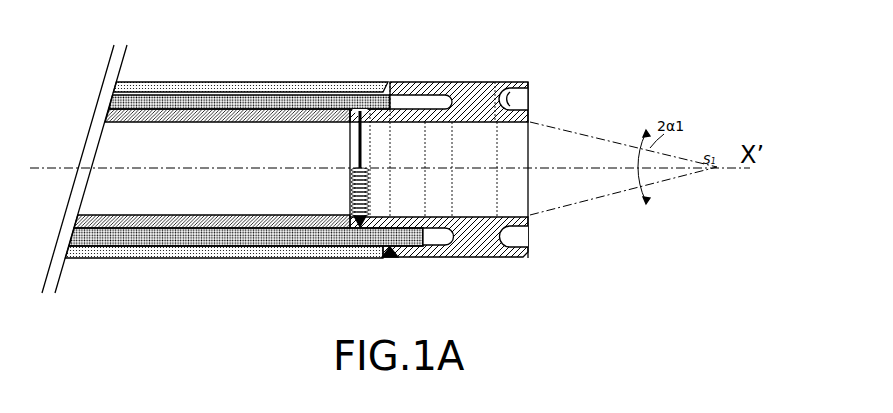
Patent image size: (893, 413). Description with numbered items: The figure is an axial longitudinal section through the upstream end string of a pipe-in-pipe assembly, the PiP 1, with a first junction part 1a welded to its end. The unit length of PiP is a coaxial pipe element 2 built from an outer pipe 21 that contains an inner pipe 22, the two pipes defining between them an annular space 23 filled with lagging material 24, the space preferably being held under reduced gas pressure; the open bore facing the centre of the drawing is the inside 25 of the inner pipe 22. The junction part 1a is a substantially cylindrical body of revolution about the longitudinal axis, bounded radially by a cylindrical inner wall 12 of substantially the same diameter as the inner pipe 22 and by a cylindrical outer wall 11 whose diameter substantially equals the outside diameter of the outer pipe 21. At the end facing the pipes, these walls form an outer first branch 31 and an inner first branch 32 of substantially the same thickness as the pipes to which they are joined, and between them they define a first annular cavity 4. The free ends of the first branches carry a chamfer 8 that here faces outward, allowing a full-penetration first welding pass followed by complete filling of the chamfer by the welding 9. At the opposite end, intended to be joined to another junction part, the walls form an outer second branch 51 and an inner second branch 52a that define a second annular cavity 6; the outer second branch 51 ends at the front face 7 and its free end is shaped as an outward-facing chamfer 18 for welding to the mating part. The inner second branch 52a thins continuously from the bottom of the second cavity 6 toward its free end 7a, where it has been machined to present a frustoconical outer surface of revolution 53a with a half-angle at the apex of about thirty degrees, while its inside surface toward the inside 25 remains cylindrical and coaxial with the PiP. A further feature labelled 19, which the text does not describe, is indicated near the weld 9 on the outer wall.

The PiP 1 is at (194, 282).
The first junction part 1a is at (472, 60).
The needle body layers 2 is at (249, 102).
The outer pipe 21 is at (213, 88).
The inner pipe 22 is at (219, 122).
The annular space 23 is at (187, 232).
The lagging material 24 is at (149, 240).
The inside of the inner pipe 25 is at (486, 159).
The outer first branch 31 is at (405, 82).
The inner first branch 32 is at (397, 122).
The first annular cavity 4 is at (432, 100).
The outer second branch 51 is at (508, 81).
The inner second branch 52a is at (510, 125).
The outer surface of revolution 53a is at (519, 100).
The second annular cavity 6 is at (533, 88).
The front face 7 is at (523, 82).
The free end 7a is at (520, 121).
The chamfer 8 is at (351, 129).
The welding 9 is at (353, 198).
The cylindrical outer wall 11 is at (482, 258).
The cylindrical inner wall 12 is at (474, 217).
The chamfer 18 is at (391, 84).
The marker 19 is at (390, 260).